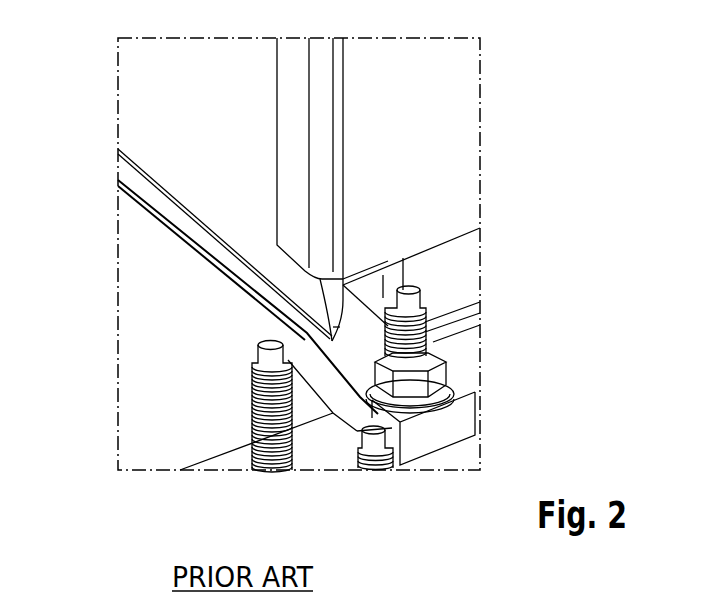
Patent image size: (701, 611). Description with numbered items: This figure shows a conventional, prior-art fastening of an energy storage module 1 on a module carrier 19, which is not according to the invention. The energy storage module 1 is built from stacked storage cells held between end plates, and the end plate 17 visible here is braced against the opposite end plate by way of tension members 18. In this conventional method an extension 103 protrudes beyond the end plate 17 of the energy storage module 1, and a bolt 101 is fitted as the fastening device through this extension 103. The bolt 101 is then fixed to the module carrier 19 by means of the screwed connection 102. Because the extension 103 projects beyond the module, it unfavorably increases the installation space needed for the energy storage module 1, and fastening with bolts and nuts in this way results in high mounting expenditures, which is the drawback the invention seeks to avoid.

The energy storage module 1 is at (86, 161).
The end plate 17 is at (128, 91).
The tension member 18 is at (465, 88).
The module carrier 19 is at (330, 447).
The bolt 101 is at (478, 313).
The screwed connection 102 is at (447, 368).
The extension 103 is at (462, 422).